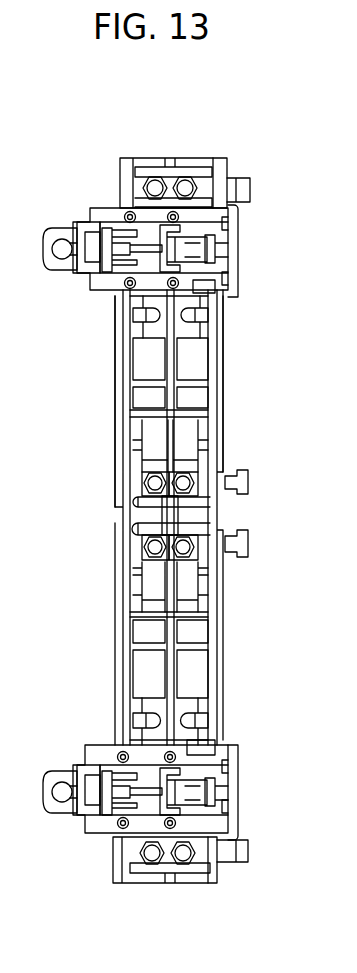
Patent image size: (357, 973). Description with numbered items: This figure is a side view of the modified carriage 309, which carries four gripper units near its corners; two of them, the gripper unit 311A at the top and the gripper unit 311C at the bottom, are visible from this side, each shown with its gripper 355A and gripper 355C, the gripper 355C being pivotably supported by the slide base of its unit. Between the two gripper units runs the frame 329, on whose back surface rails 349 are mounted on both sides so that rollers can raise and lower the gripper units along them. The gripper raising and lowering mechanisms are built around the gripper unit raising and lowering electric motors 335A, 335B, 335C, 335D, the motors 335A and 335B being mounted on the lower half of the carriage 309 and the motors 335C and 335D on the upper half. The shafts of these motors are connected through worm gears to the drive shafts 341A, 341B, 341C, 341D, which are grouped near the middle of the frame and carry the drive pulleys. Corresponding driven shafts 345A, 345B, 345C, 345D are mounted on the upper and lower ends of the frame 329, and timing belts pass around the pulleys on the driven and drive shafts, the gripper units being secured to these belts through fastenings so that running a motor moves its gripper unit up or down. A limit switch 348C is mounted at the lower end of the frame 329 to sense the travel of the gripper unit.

The carriage 309 is at (291, 137).
The gripper unit 311A is at (79, 214).
The gripper unit 311C is at (69, 763).
The frame 329 is at (213, 437).
The gripper unit raising and lowering electric motor 335A is at (197, 670).
The gripper unit raising and lowering electric motor 335B is at (140, 662).
The gripper unit raising and lowering electric motor 335C is at (142, 362).
The gripper unit raising and lowering electric motor 335D is at (192, 377).
The drive shaft 341A is at (184, 556).
The drive shaft 341B is at (148, 547).
The drive shaft 341C is at (148, 484).
The drive shaft 341D is at (190, 483).
The driven shaft 345A is at (185, 178).
The driven shaft 345B is at (155, 178).
The driven shaft 345C is at (150, 861).
The driven shaft 345D is at (183, 862).
The limit switch 348C is at (243, 862).
The rail 349 is at (113, 457).
The gripper 355A is at (62, 271).
The gripper 355C is at (62, 813).